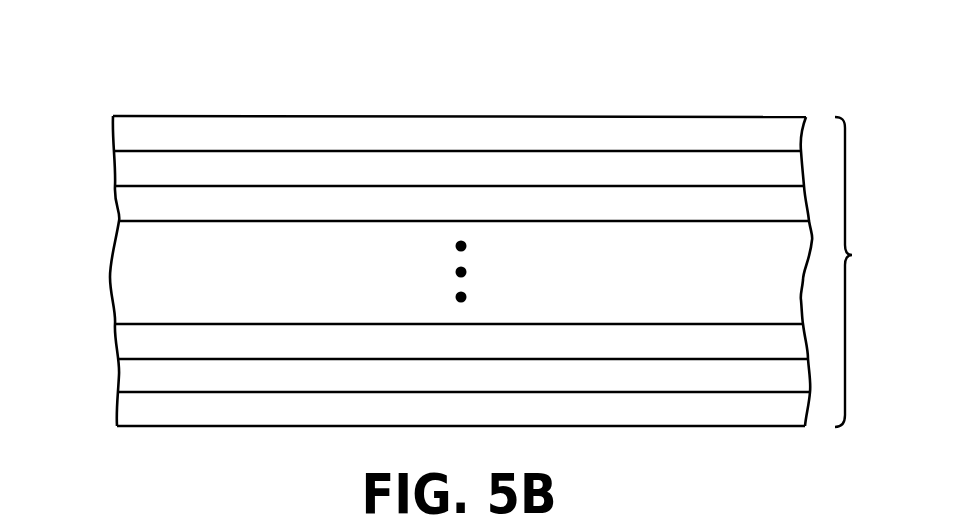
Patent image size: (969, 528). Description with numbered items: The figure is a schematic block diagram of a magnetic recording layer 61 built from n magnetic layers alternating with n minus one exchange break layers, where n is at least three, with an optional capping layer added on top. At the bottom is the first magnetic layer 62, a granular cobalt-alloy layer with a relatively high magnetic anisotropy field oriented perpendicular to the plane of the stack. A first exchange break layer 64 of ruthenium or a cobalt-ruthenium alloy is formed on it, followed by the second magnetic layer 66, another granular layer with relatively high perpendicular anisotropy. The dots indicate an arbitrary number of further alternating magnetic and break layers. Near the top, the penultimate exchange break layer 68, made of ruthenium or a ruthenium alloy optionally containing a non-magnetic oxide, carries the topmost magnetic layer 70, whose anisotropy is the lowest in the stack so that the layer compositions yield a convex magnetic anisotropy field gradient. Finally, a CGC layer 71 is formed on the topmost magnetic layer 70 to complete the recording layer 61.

The magnetic recording layer 61 is at (498, 271).
The first magnetic layer 62 is at (152, 408).
The first exchange break layer 64 is at (152, 373).
The second magnetic layer 66 is at (152, 339).
The exchange break layer n−1 68 is at (152, 201).
The magnetic layer n 70 is at (152, 166).
The CGC layer 71 is at (152, 132).